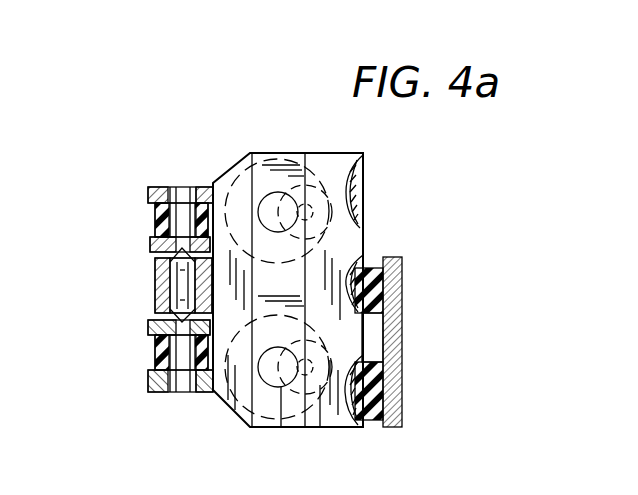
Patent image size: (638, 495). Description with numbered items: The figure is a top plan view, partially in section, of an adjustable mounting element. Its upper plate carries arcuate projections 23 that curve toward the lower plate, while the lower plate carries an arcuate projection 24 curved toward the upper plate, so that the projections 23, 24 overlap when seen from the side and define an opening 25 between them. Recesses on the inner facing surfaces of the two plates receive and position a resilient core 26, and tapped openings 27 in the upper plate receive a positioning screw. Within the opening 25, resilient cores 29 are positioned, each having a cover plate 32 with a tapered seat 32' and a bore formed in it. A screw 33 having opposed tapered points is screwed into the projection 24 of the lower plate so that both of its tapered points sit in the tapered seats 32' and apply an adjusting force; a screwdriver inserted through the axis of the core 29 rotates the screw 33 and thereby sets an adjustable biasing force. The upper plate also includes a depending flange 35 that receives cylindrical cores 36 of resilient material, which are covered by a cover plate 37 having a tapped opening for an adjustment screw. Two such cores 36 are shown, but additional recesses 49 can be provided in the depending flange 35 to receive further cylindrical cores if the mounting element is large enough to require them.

The arcuate projections 23 is at (157, 192).
The arcuate projection 24 is at (157, 282).
The opening 25 is at (140, 218).
The resilient core 26 is at (260, 176).
The tapped openings 27 is at (292, 200).
The resilient cores 29 is at (153, 212).
The cover plate 32 is at (141, 299).
The tapered seat 32' is at (144, 267).
The screw 33 is at (180, 295).
The depending flange 35 is at (350, 430).
The cylindrical cores 36 is at (383, 277).
The cover plate 37 is at (390, 322).
The recesses 49 is at (363, 208).